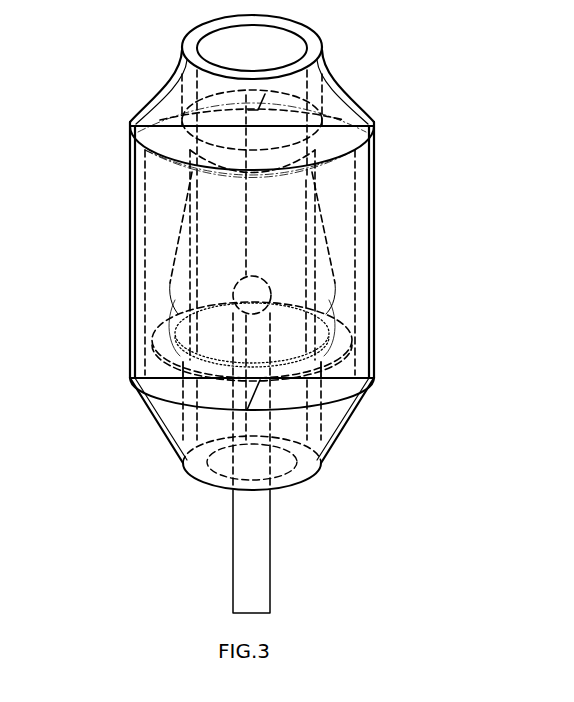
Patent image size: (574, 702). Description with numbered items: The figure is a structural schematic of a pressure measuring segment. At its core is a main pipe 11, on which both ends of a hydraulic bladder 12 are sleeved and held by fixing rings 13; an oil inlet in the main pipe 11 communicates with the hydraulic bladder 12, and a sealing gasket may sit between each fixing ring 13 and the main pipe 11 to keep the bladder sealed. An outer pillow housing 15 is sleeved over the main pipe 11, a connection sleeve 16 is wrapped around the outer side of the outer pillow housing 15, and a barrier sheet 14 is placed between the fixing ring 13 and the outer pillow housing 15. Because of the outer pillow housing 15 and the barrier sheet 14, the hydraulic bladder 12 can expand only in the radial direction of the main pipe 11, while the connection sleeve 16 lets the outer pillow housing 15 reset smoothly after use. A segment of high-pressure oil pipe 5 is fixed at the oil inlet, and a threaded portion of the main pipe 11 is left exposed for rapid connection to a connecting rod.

The high-pressure oil pipe 5 is at (230, 565).
The main pipe 11 is at (306, 265).
The hydraulic bladder 12 is at (170, 285).
The fixing ring 13 is at (178, 345).
The barrier sheet 14 is at (340, 340).
The outer pillow housing 15 is at (140, 194).
The connection sleeve 16 is at (165, 84).